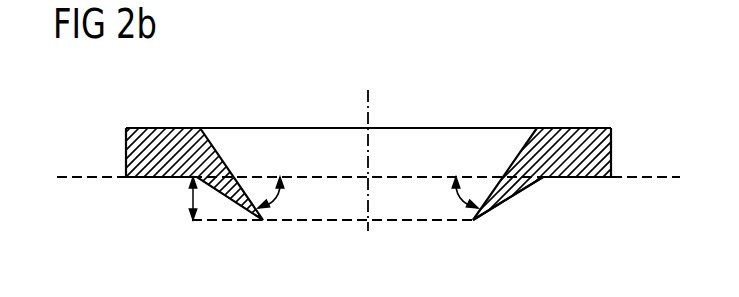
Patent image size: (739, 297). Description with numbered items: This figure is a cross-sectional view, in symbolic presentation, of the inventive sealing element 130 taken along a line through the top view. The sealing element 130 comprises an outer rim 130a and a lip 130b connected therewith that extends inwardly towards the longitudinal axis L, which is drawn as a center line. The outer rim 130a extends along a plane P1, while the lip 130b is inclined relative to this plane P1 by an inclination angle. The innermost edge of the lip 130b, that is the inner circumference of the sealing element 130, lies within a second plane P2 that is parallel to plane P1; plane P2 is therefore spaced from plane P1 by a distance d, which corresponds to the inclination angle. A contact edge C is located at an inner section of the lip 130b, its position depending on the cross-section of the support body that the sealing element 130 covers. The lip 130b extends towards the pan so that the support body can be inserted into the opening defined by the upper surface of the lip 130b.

The sealing element 130 is at (562, 118).
The outer rim 130a is at (593, 178).
The lip 130b is at (493, 208).
The plane P1 is at (73, 176).
The plane P2 is at (225, 223).
The longitudinal axis L is at (370, 97).
The distance d is at (188, 201).
The contact edge C is at (247, 176).